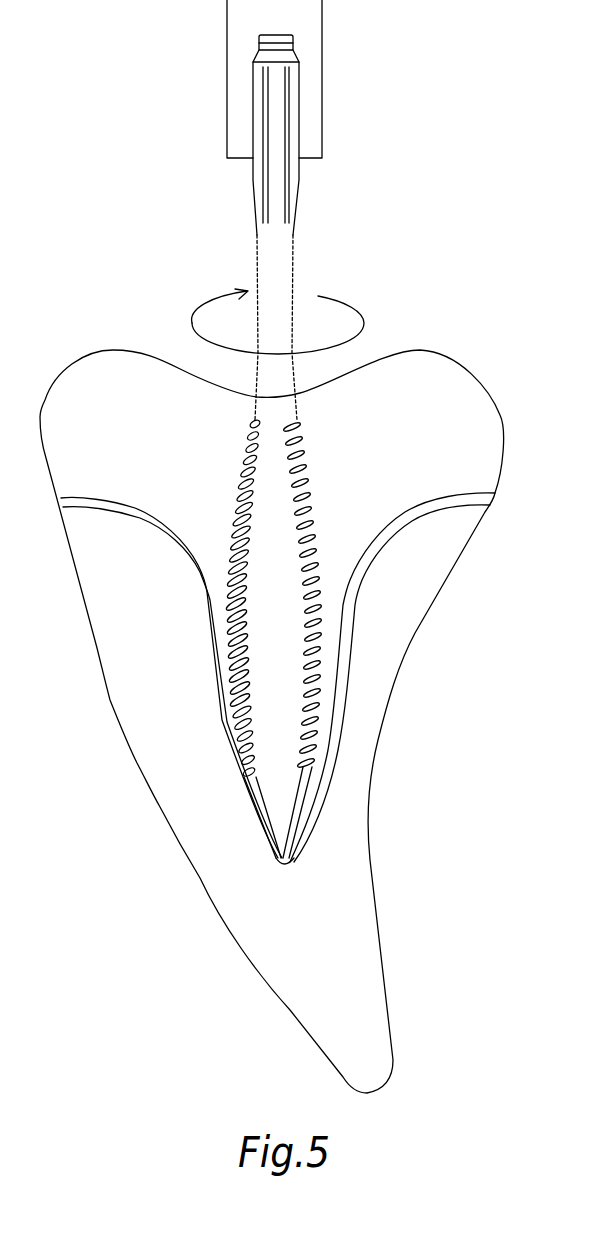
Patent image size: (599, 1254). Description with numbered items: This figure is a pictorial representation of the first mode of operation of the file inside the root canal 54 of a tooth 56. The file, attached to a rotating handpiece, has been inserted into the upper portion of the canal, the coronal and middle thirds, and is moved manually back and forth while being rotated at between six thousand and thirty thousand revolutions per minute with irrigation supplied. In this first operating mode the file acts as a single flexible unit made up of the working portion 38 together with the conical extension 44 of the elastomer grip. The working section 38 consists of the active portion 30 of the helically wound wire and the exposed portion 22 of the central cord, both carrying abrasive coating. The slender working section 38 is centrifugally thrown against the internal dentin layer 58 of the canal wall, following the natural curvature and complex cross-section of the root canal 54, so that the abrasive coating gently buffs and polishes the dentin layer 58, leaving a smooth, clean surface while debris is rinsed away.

The exposed portion 22 is at (300, 810).
The active portion 30 is at (315, 493).
The working section 38 is at (233, 555).
The conical extension 44 is at (294, 327).
The root canal 54 is at (335, 568).
The tooth 56 is at (428, 352).
The dentin layer 58 is at (208, 643).